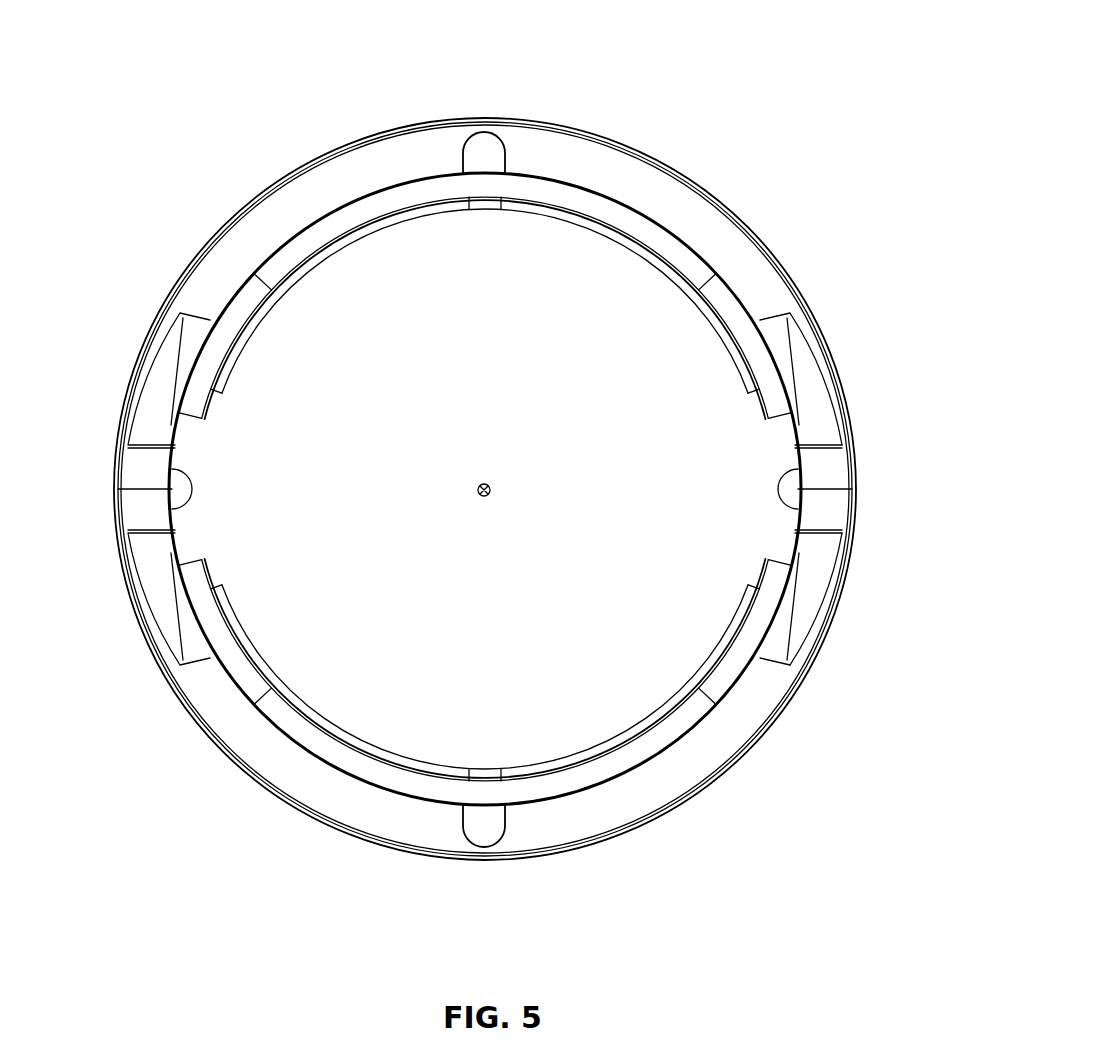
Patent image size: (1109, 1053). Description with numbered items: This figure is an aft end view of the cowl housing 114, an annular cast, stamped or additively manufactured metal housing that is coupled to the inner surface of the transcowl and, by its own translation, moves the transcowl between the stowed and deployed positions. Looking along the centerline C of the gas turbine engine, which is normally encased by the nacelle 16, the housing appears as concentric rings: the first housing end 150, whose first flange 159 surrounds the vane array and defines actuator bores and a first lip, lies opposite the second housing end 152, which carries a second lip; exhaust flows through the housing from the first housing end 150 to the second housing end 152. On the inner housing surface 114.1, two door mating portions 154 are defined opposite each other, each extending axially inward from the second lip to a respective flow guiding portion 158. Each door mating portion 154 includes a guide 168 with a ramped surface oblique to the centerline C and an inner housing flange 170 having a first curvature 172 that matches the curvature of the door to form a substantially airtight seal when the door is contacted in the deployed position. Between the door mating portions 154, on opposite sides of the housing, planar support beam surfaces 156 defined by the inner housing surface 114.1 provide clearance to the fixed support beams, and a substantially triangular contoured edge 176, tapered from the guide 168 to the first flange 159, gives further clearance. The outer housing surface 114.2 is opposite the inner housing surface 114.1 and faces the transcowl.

The cowl housing 114 is at (758, 40).
The inner housing surface 114.1 is at (820, 437).
The outer housing surface 114.2 is at (840, 462).
The first housing end 150 is at (718, 785).
The second housing end 152 is at (690, 240).
The door mating portion 154 is at (200, 443).
The support beam surface 156 is at (170, 470).
The flow guiding portion 158 is at (441, 219).
The first flange 159 is at (612, 835).
The nacelle 16 is at (490, 843).
The guide 168 is at (618, 222).
The inner housing flange 170 is at (598, 237).
The first curvature 172 is at (562, 218).
The contoured edge 176 is at (232, 392).
The centerline C is at (492, 497).